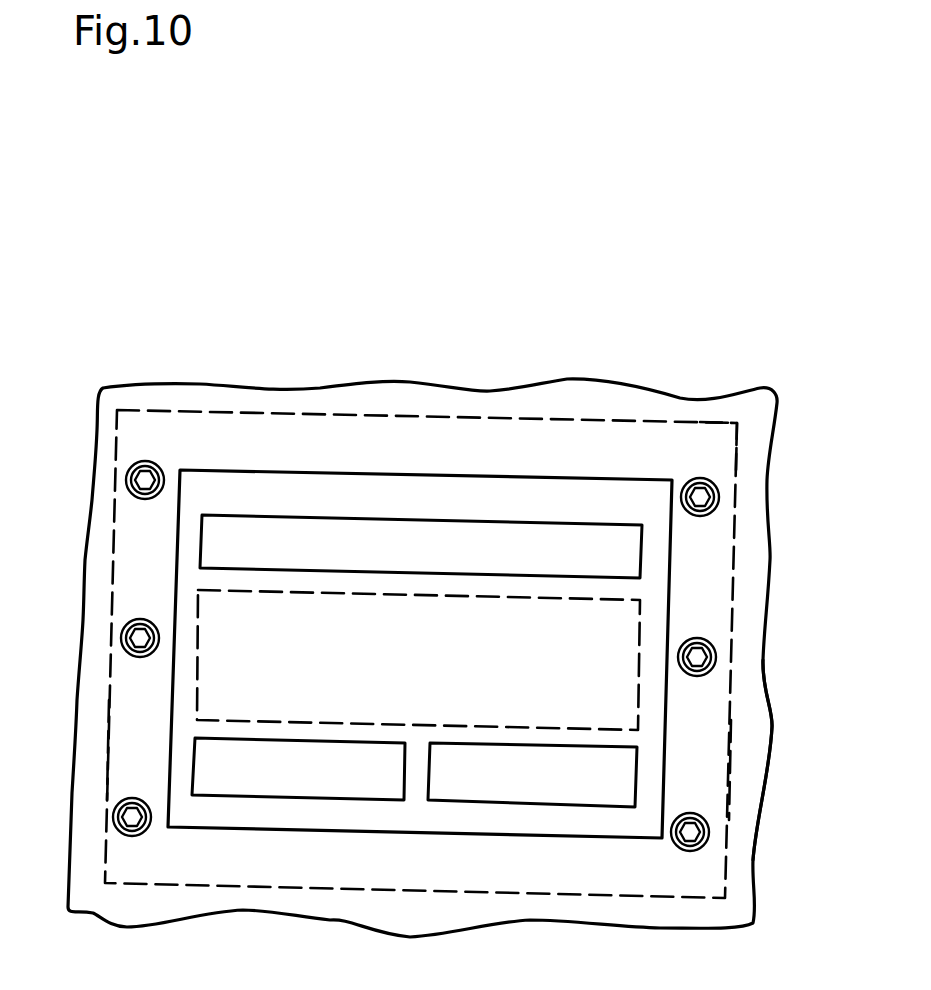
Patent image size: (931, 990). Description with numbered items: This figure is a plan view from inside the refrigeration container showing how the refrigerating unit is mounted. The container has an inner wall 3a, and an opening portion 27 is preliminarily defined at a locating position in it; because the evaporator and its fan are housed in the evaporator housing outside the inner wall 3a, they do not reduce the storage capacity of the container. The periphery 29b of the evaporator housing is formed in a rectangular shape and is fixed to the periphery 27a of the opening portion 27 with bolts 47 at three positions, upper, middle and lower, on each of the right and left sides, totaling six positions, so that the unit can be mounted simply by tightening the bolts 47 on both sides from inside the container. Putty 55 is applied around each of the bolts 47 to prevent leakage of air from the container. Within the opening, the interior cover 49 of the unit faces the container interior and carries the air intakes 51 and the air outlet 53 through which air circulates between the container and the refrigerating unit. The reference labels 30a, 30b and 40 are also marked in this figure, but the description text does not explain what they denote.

The inner wall 3a is at (415, 397).
The opening portion 27 is at (595, 423).
The periphery of the opening portion 27a is at (702, 722).
The periphery of the evaporator housing 29b is at (697, 440).
The hidden member left 30a is at (130, 750).
The hidden member right 30b is at (698, 780).
The fastening bolt 40 is at (711, 642).
The bolts 47 is at (145, 482).
The interior cover 49 is at (185, 682).
The air intakes 51 is at (320, 782).
The air outlet 53 is at (268, 540).
The putty 55 is at (138, 463).